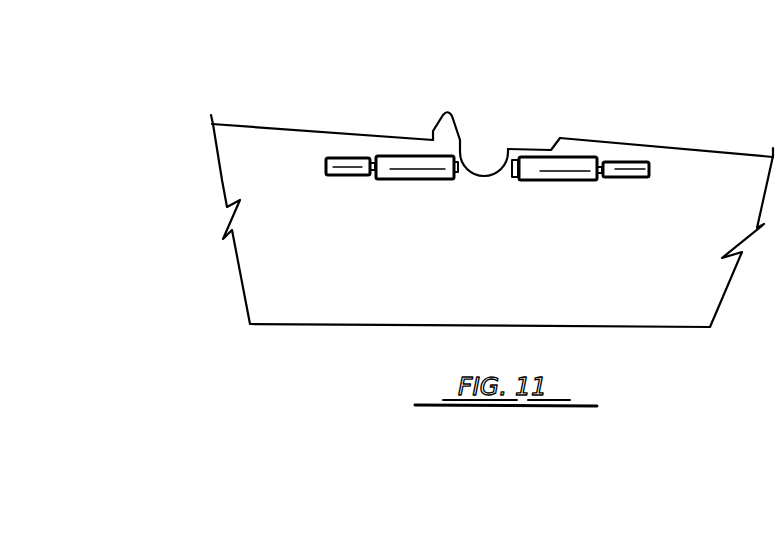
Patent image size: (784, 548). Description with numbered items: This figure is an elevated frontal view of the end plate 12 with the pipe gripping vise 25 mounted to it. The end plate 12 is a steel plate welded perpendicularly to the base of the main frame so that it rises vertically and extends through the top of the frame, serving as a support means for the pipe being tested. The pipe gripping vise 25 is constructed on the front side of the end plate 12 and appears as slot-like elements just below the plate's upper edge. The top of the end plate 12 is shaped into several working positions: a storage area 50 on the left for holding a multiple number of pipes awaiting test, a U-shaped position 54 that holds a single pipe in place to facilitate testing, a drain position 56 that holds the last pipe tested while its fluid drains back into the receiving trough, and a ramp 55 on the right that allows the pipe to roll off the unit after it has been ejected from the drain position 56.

The end plate 12 is at (243, 147).
The storage area 50 is at (307, 129).
The U-shaped position 54 is at (485, 175).
The drain position 56 is at (538, 149).
The ramp 55 is at (662, 148).
The pipe gripping vise 25 is at (402, 167).